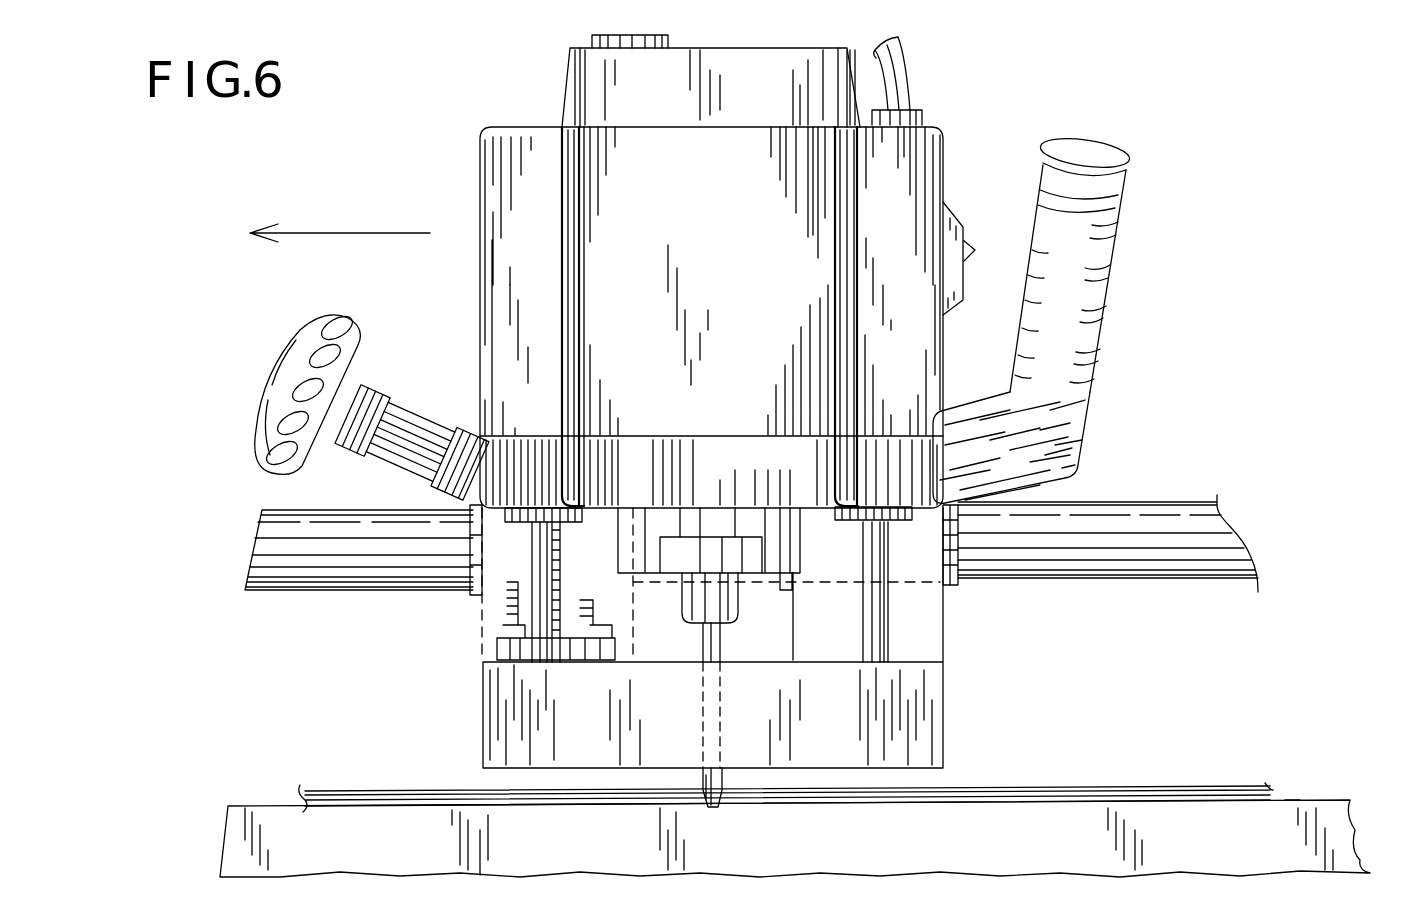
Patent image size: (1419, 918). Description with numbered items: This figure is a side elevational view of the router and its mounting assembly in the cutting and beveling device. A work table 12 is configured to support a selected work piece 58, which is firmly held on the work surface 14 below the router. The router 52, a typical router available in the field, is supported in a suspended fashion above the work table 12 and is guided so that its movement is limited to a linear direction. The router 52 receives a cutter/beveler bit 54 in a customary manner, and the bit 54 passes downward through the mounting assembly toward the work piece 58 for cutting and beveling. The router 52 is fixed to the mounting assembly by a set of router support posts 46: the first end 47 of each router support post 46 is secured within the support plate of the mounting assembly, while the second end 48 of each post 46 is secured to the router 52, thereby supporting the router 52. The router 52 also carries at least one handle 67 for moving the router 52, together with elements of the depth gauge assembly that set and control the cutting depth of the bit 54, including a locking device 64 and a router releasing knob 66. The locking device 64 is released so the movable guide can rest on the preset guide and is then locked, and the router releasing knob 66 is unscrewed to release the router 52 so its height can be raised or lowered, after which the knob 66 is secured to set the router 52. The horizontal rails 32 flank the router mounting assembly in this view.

The work table 12 is at (1330, 843).
The work surface 14 is at (1292, 800).
The guide rails 32 is at (1147, 563).
The router support posts 46 is at (547, 572).
The first end 47 is at (532, 662).
The second end 48 is at (530, 522).
The router 52 is at (630, 242).
The cutter/beveler bit 54 is at (722, 805).
The work piece 58 is at (1135, 790).
The locking device 64 is at (442, 345).
The router releasing knob 66 is at (255, 426).
The handle 67 is at (1103, 247).